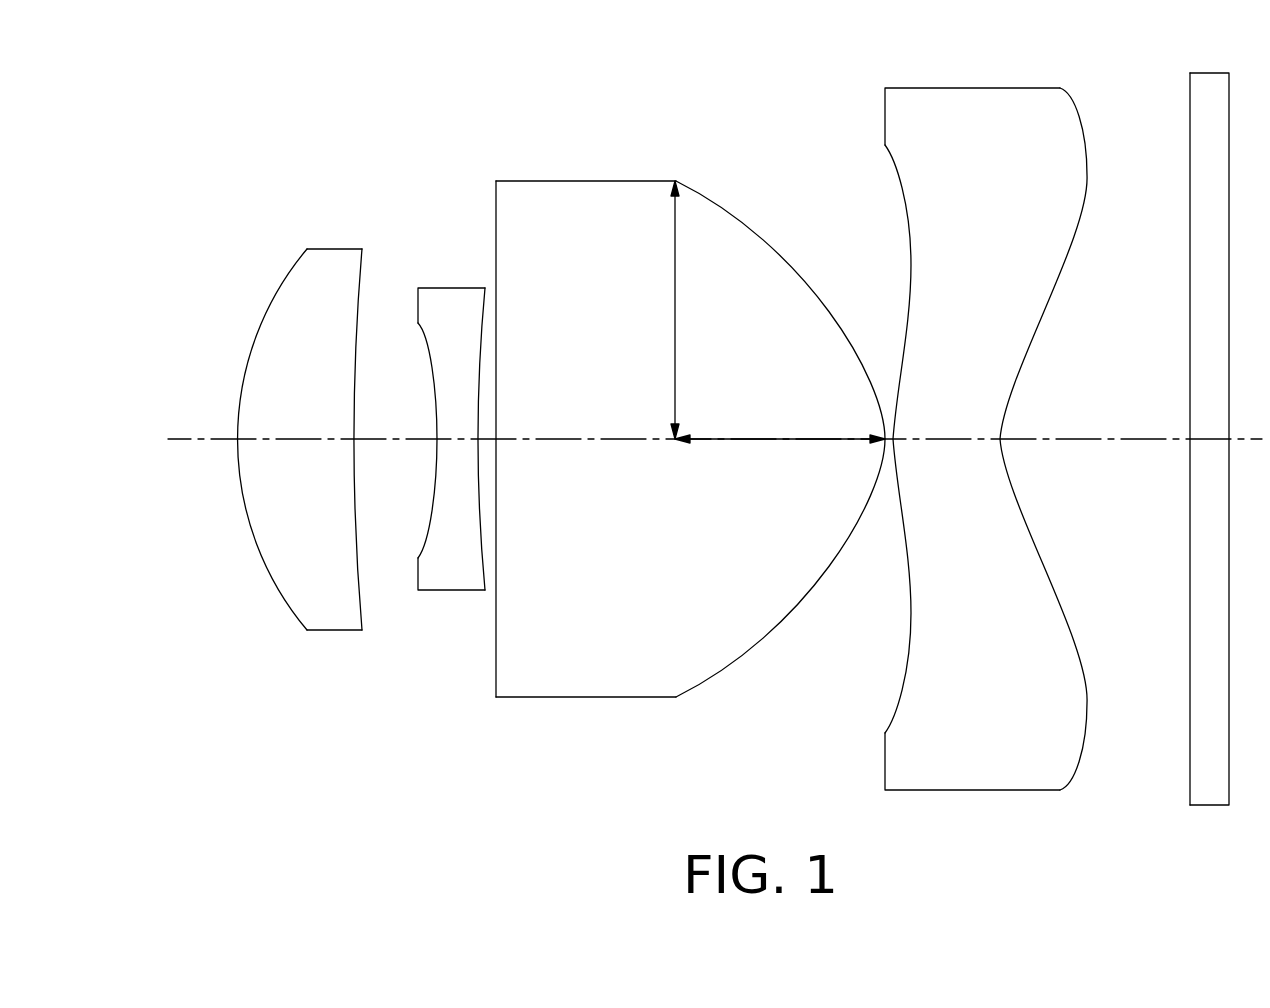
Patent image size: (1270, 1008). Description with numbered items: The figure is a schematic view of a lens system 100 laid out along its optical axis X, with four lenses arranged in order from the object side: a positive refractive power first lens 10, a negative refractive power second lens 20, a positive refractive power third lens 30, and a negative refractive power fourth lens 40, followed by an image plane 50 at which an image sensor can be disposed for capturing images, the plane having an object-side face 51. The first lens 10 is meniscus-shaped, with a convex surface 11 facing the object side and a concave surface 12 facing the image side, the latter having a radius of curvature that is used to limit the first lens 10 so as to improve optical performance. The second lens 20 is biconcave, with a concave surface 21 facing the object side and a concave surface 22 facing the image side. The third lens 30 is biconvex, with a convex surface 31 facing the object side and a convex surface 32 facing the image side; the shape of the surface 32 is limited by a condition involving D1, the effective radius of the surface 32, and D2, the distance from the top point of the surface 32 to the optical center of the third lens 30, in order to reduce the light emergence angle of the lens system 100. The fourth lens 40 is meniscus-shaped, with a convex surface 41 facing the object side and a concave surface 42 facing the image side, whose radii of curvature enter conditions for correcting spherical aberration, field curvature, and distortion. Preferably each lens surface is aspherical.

The lens system 100 is at (786, 77).
The first lens 10 is at (272, 406).
The convex surface 11 is at (263, 323).
The concave surface 12 is at (362, 302).
The second lens 20 is at (332, 404).
The concave surface 21 is at (435, 400).
The concave surface 22 is at (479, 385).
The third lens 30 is at (661, 470).
The convex surface 31 is at (495, 645).
The convex surface 32 is at (767, 245).
The fourth lens 40 is at (963, 462).
The convex surface 41 is at (907, 631).
The concave surface 42 is at (1117, 89).
The image plane 50 is at (1175, 478).
The object-side surface of cover glass 51 is at (1190, 681).
The effective radius of the surface 32 D1 is at (655, 310).
The distance from the top point of the surface 32 to the optical center of the third D2 is at (780, 421).
The optical axis X is at (697, 457).